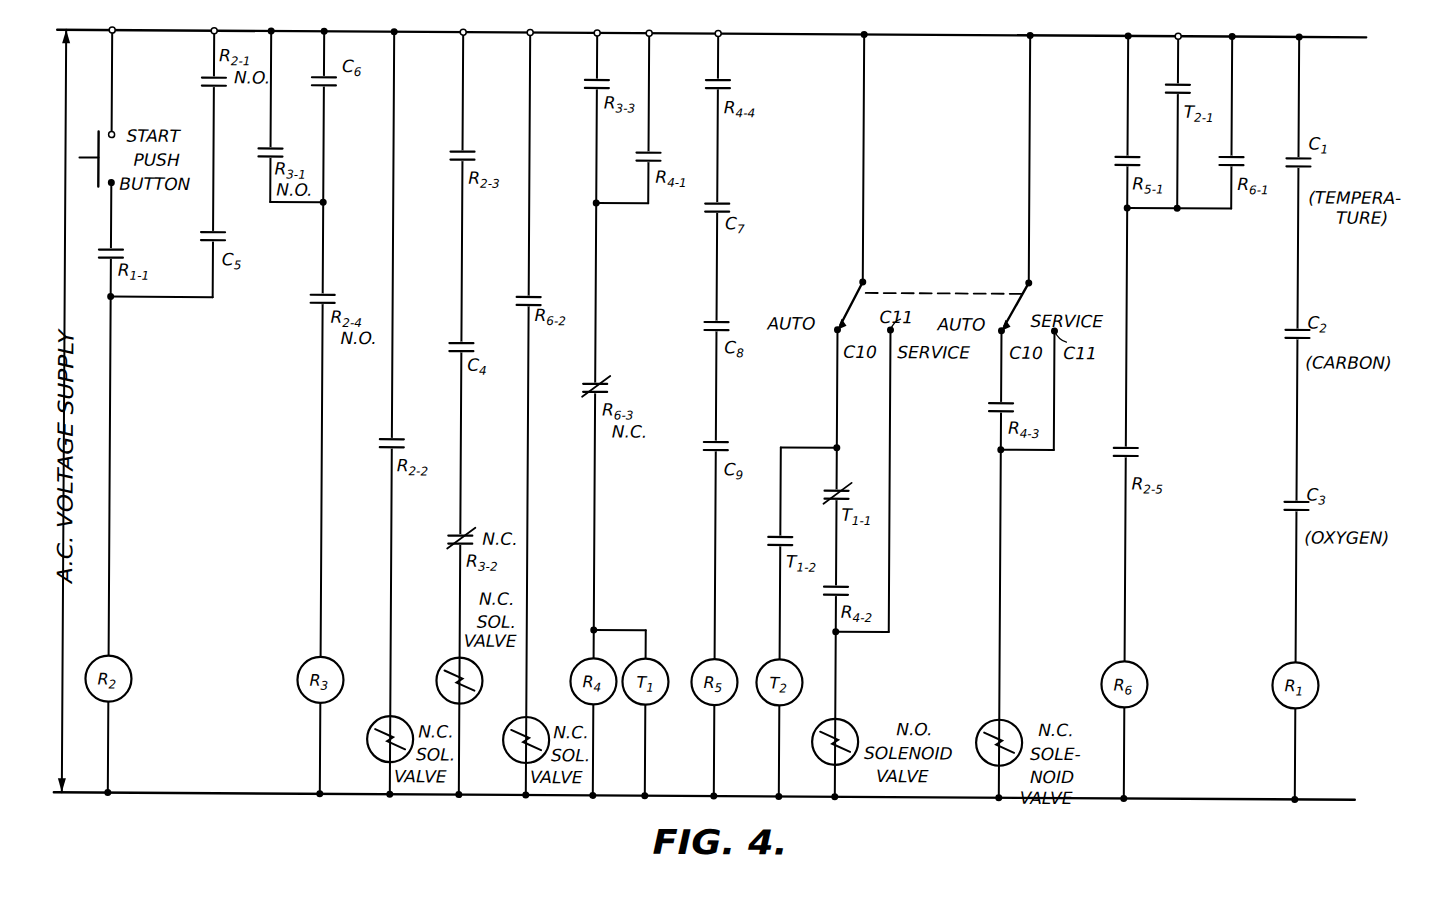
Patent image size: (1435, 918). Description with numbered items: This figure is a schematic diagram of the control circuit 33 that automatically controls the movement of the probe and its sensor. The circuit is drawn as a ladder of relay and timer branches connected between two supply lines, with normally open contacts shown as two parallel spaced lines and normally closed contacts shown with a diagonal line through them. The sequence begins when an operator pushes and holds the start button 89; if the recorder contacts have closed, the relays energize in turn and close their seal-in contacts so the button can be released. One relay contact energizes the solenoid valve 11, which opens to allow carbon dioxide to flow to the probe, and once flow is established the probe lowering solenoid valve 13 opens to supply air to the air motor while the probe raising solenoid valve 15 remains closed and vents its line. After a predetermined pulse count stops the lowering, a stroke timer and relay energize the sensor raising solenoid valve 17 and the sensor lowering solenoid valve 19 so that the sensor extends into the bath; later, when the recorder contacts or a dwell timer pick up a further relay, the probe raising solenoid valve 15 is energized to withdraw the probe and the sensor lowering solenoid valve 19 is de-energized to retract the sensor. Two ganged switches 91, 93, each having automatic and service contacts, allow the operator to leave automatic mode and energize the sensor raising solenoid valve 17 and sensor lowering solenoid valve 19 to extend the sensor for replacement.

The solenoid valve 11 is at (403, 720).
The probe lowering solenoid valve 13 is at (447, 665).
The probe raising solenoid valve 15 is at (541, 720).
The sensor raising solenoid valve 17 is at (851, 724).
The sensor lowering solenoid valve 19 is at (1015, 724).
The control circuit 33 is at (918, 32).
The start button 89 is at (96, 146).
The ganged switch 91 is at (1022, 296).
The ganged switch 93 is at (848, 296).